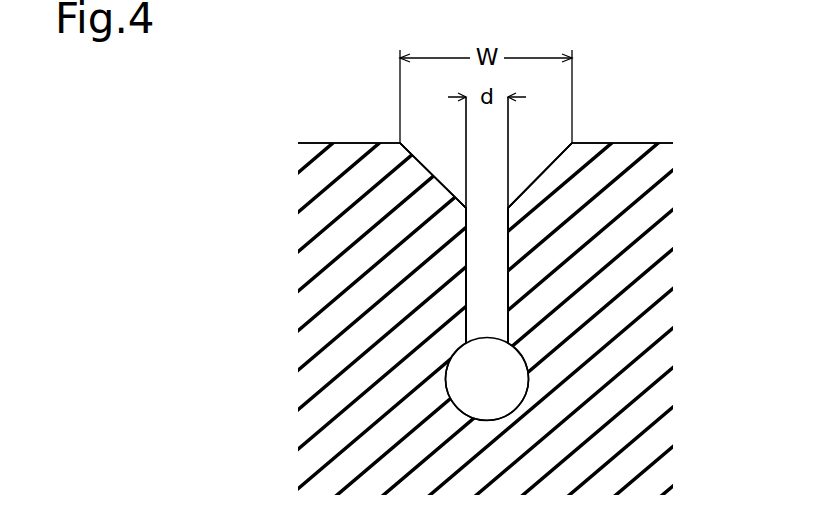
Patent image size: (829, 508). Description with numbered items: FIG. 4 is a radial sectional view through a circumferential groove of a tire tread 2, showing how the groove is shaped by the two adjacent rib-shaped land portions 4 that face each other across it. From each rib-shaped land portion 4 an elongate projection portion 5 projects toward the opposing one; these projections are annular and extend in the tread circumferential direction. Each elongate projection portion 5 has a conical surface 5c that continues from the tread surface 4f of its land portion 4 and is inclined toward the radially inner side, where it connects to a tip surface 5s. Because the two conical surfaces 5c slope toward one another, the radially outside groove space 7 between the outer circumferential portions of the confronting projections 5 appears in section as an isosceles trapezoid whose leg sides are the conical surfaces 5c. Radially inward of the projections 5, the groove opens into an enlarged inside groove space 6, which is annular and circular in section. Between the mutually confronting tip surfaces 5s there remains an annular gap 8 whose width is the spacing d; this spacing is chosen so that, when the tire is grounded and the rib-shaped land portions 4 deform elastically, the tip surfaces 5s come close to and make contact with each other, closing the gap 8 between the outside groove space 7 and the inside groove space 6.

The workpiece 2 is at (371, 92).
The rib-shaped land portion 4 is at (485, 254).
The tread surface 4f is at (340, 143).
The elongate projection portion 5 is at (486, 243).
The conical surface 5c is at (426, 168).
The tip surface 5s is at (468, 277).
The inside groove space 6 is at (478, 387).
The outside groove space 7 is at (478, 187).
The gap 8 is at (488, 323).